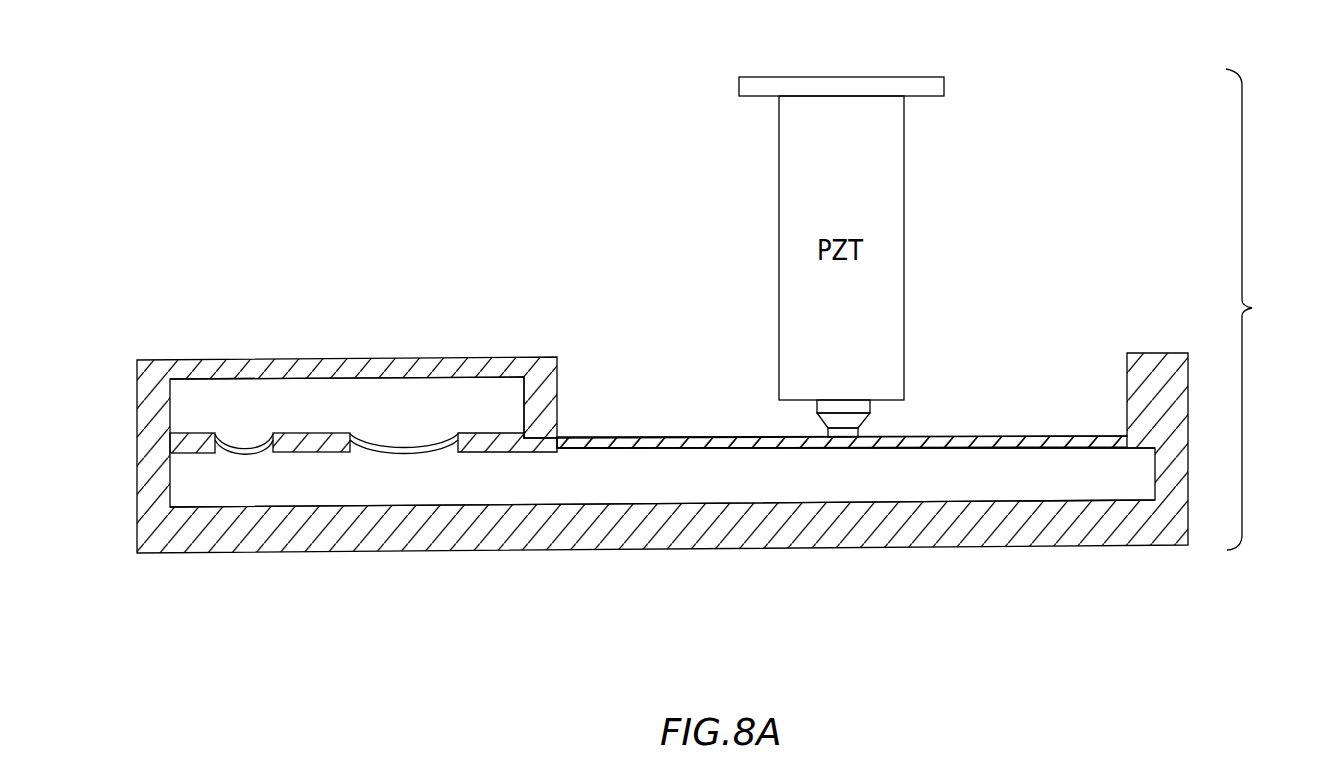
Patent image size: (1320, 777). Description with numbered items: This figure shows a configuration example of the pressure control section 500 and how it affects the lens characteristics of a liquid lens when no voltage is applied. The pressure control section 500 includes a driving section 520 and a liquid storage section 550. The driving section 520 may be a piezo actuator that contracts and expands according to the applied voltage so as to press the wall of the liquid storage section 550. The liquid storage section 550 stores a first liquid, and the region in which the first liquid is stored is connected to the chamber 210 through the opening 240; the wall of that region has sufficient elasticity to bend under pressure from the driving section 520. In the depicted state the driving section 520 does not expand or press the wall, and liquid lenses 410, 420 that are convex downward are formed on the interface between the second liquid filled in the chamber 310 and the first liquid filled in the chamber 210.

The chamber 210 is at (410, 475).
The opening 240 is at (538, 475).
The chamber 310 is at (455, 398).
The liquid lens 410 is at (243, 447).
The liquid lens 420 is at (403, 445).
The pressure control section 500 is at (1263, 309).
The driving section 520 is at (840, 77).
The liquid storage section 550 is at (1008, 472).